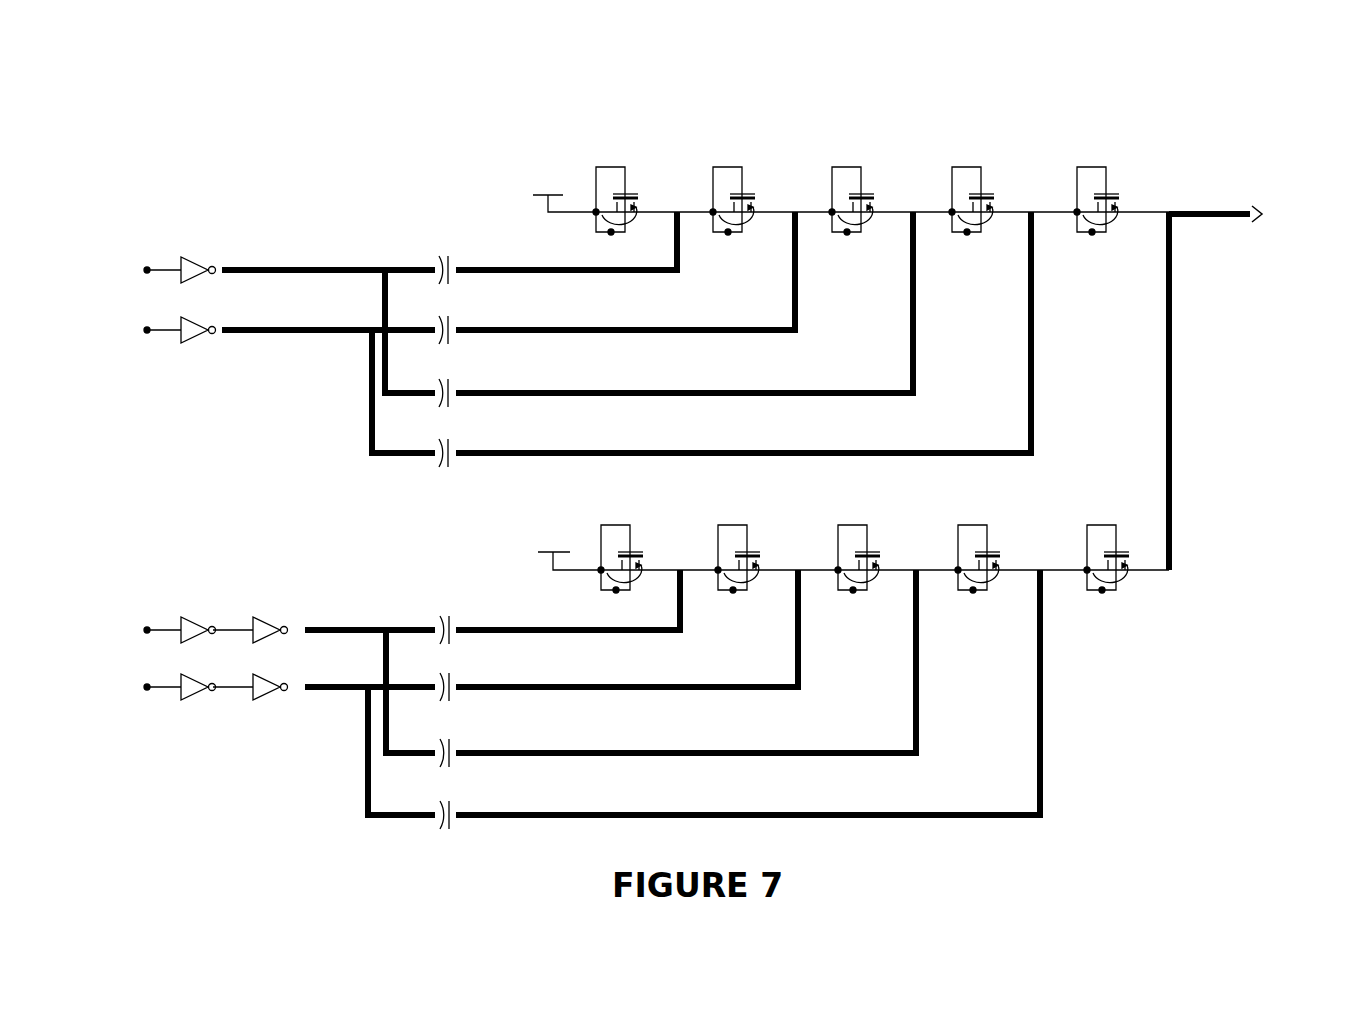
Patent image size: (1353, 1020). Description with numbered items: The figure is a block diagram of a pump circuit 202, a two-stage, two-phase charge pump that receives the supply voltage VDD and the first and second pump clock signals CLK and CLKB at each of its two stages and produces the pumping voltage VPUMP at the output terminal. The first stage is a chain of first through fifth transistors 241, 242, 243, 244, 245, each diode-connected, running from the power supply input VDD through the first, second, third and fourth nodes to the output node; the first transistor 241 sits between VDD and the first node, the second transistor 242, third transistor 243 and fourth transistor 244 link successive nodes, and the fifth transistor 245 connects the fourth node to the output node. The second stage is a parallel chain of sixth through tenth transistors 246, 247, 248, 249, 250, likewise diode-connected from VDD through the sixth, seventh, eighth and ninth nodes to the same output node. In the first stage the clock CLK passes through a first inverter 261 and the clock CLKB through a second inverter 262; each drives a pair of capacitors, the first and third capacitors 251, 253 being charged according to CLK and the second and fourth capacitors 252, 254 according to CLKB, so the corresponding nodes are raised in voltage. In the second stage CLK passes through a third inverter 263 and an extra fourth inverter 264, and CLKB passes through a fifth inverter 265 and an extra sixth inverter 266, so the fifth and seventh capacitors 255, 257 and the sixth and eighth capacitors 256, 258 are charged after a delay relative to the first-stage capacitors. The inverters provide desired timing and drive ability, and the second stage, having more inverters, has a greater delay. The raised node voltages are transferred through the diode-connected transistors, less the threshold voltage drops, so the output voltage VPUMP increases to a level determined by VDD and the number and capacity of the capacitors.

The pump circuit 202 is at (1187, 86).
The first transistor 241 is at (638, 150).
The second transistor 242 is at (750, 170).
The third transistor 243 is at (878, 152).
The fourth transistor 244 is at (990, 170).
The fifth transistor 245 is at (1120, 176).
The sixth transistor 246 is at (632, 522).
The seventh transistor 247 is at (750, 522).
The eighth transistor 248 is at (870, 522).
The ninth transistor 249 is at (995, 522).
The tenth transistor 250 is at (1120, 522).
The first capacitor 251 is at (458, 258).
The second capacitor 252 is at (462, 320).
The third capacitor 253 is at (462, 383).
The fourth capacitor 254 is at (462, 445).
The fifth capacitor 255 is at (458, 618).
The sixth capacitor 256 is at (460, 680).
The seventh capacitor 257 is at (460, 745).
The eighth capacitor 258 is at (460, 808).
The first inverter 261 is at (230, 245).
The second inverter 262 is at (215, 320).
The third inverter 263 is at (210, 595).
The fourth inverter 264 is at (290, 612).
The fifth inverter 265 is at (192, 702).
The sixth inverter 266 is at (276, 705).